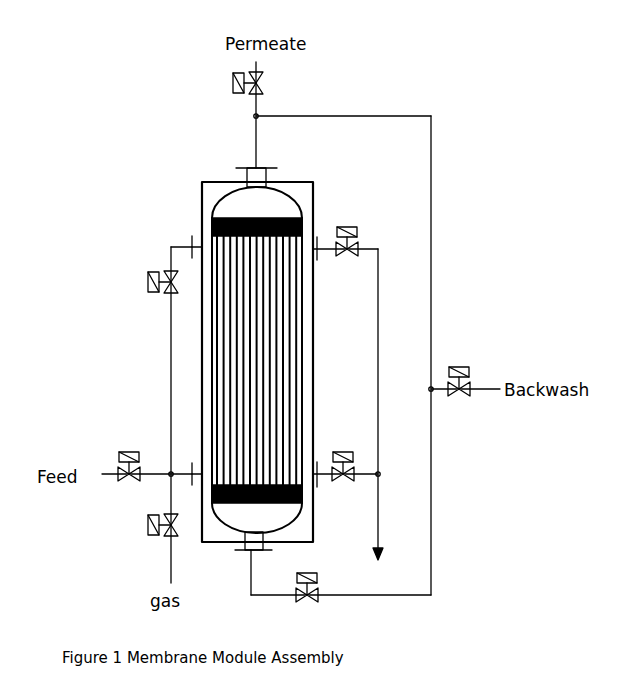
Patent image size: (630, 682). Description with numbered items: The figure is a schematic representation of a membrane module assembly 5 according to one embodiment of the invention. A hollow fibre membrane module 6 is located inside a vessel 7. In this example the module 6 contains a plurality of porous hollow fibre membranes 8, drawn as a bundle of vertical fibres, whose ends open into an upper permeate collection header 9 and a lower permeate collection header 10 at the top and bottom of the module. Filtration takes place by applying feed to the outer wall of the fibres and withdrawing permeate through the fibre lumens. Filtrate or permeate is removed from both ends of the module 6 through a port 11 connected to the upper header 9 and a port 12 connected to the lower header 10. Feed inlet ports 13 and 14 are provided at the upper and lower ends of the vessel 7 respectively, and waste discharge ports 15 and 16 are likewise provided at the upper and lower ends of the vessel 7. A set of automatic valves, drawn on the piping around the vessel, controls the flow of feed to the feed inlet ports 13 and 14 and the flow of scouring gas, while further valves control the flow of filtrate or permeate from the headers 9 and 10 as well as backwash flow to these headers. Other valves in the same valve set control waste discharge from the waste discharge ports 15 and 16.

The membrane module assembly 5 is at (452, 190).
The hollow fibre membrane module 6 is at (225, 440).
The vessel 7 is at (200, 205).
The porous hollow fibre membranes 8 is at (221, 348).
The upper permeate collection header 9 is at (275, 205).
The lower permeate collection header 10 is at (238, 518).
The port 11 is at (255, 168).
The port 12 is at (263, 541).
The feed inlet port 13 is at (190, 243).
The feed inlet port 14 is at (185, 478).
The waste discharge port 15 is at (318, 243).
The waste discharge port 16 is at (320, 470).